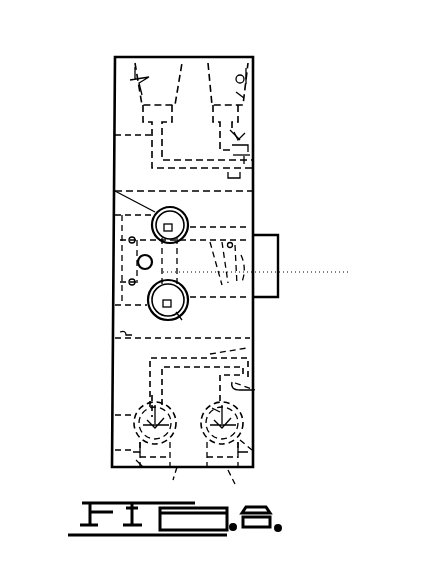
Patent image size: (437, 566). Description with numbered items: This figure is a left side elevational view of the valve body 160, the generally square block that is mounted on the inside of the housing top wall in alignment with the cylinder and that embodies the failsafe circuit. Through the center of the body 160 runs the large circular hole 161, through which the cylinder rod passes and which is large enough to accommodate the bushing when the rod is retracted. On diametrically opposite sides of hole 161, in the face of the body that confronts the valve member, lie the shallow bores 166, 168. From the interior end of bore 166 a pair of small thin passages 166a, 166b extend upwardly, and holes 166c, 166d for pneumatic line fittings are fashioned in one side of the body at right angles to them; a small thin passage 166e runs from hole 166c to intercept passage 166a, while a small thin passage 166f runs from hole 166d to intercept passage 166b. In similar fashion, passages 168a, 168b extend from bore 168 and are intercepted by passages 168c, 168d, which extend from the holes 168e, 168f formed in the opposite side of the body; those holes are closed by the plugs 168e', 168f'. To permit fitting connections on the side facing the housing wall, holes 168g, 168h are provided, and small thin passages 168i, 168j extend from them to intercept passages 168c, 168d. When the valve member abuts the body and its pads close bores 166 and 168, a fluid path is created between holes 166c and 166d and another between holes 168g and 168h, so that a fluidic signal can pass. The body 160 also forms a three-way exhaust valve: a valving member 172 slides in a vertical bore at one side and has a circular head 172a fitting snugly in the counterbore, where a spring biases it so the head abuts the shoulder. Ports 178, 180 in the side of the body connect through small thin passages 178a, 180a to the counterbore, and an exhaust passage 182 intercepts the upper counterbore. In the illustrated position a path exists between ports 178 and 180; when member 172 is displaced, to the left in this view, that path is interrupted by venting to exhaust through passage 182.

The valve body 160 is at (254, 58).
The large circular hole 161 is at (115, 337).
The shallow bore 166 is at (262, 147).
The small thin passage 166a is at (256, 130).
The small thin passage 166b is at (262, 175).
The hole for pneumatic line fitting 166c is at (255, 72).
The hole for pneumatic line fitting 166d is at (130, 84).
The small thin passage 166e is at (262, 108).
The small thin passage 166f is at (115, 135).
The shallow bore 168 is at (255, 368).
The small thin passage 168a is at (255, 390).
The small thin passage 168b is at (255, 340).
The passage 168c is at (255, 400).
The passage 168d is at (150, 385).
The hole 168e is at (300, 459).
The plug 168e' is at (278, 487).
The hole 168f is at (89, 454).
The plug 168f' is at (100, 479).
The hole for pneumatic line fitting 168g is at (255, 425).
The hole for pneumatic line fitting 168h is at (133, 417).
The small thin passage 168i is at (212, 407).
The small thin passage 168j is at (189, 485).
The valving member 172 is at (272, 236).
The circular head 172a is at (122, 240).
The hole or port 178 is at (188, 213).
The small thin passage 178a is at (158, 210).
The hole or port 180 is at (240, 305).
The small thin passage 180a is at (174, 316).
The exhaust passage 182 is at (138, 265).